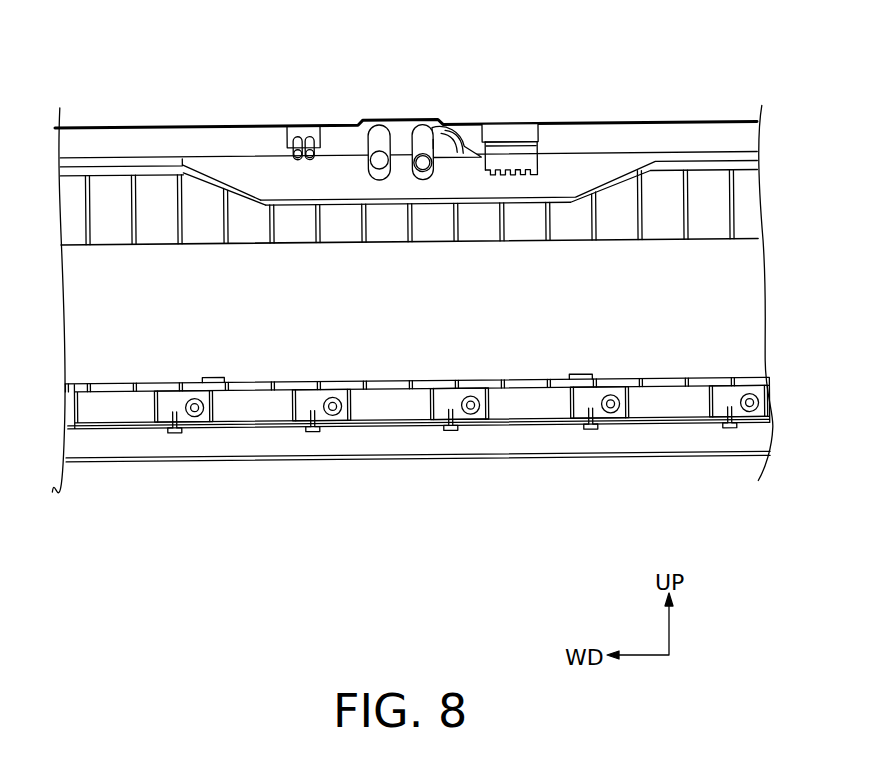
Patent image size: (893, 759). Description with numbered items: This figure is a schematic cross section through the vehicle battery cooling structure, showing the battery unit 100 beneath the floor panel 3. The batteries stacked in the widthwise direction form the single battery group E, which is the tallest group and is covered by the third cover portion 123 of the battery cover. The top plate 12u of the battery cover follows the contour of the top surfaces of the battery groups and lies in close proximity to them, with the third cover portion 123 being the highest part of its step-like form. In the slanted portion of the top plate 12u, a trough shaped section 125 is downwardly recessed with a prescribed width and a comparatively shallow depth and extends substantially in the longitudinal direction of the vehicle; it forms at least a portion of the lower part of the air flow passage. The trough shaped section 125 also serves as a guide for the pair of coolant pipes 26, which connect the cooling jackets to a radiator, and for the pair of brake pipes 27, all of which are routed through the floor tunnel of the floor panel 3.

The floor panel 3 is at (725, 126).
The top plate 12u is at (668, 164).
The third cover portion 123 is at (147, 168).
The trough shaped section 125 is at (537, 198).
The coolant pipes 26 is at (422, 130).
The brake pipes 27 is at (310, 136).
The battery unit 100 is at (325, 466).
The battery group E is at (435, 326).